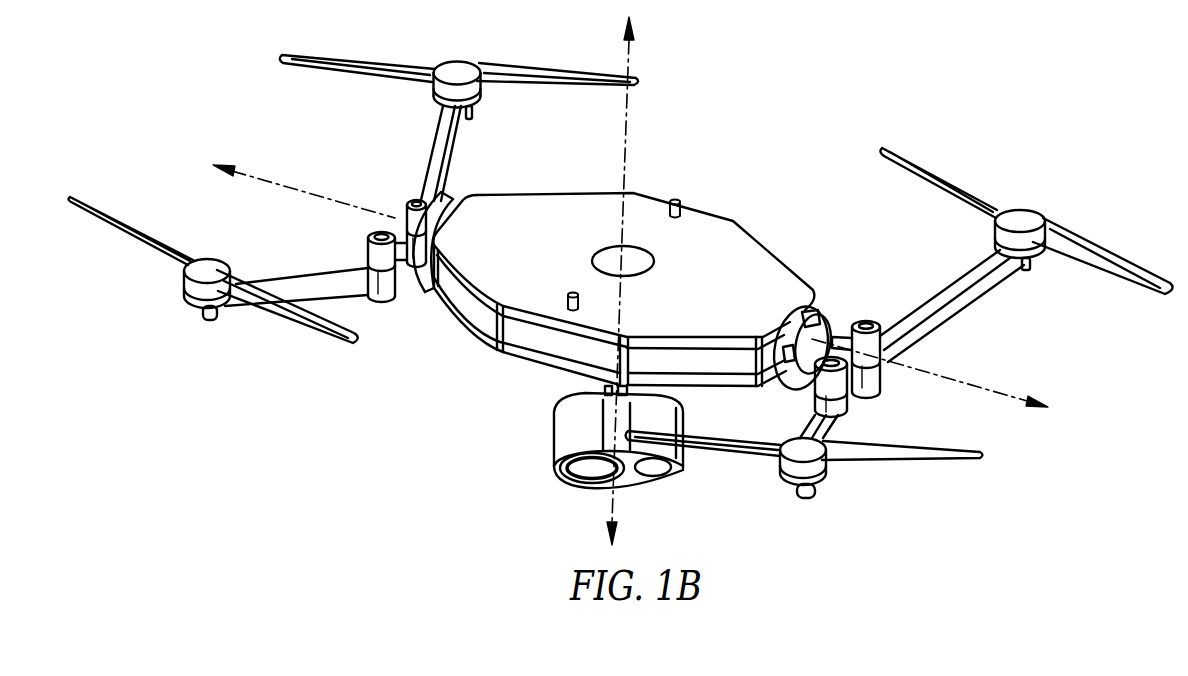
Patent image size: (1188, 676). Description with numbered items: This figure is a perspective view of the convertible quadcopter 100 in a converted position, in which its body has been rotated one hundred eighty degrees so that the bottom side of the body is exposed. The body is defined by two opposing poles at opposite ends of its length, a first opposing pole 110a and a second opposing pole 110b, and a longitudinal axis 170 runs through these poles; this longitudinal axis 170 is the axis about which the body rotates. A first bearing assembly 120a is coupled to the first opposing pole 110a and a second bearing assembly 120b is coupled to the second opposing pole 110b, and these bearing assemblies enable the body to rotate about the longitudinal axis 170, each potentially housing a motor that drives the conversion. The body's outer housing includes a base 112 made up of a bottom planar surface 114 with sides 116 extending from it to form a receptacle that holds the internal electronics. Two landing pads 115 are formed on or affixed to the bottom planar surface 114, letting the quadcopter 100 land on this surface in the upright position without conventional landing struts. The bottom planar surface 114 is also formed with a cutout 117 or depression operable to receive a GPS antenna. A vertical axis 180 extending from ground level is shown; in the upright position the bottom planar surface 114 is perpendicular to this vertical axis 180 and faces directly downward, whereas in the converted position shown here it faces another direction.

The quadcopter 100 is at (862, 70).
The first opposing pole 110a is at (784, 328).
The second opposing pole 110b is at (430, 196).
The base 112 is at (680, 342).
The bottom planar surface 114 is at (738, 252).
The landing pads 115 is at (682, 202).
The sides 116 is at (550, 348).
The cutout 117 is at (596, 256).
The first bearing assembly 120a is at (823, 314).
The second bearing assembly 120b is at (400, 220).
The longitudinal axis 170 is at (1002, 397).
The vertical axis 180 is at (629, 108).